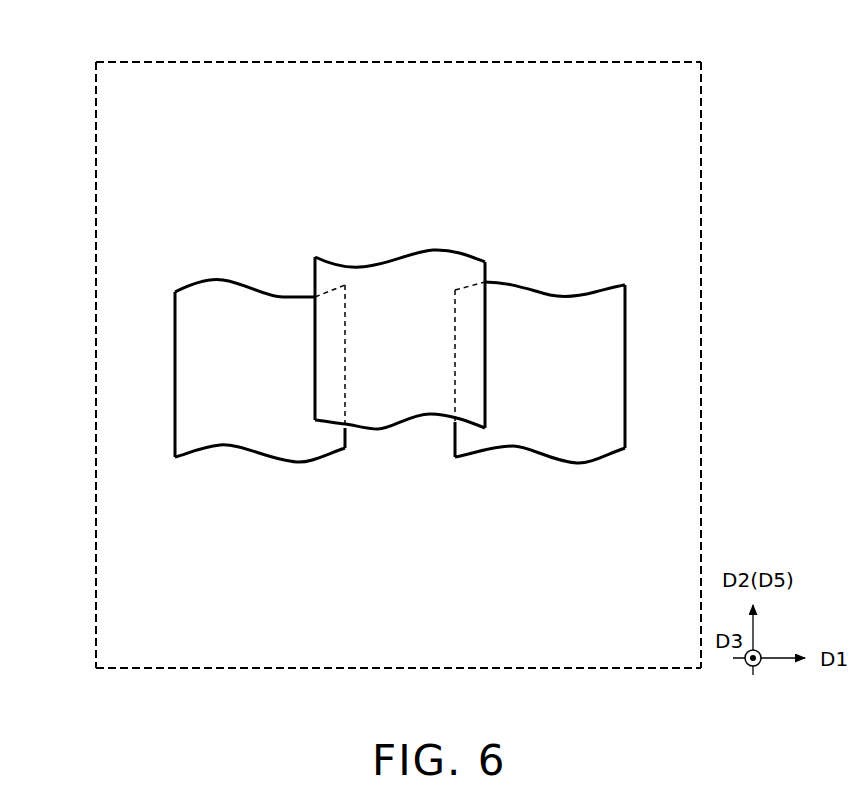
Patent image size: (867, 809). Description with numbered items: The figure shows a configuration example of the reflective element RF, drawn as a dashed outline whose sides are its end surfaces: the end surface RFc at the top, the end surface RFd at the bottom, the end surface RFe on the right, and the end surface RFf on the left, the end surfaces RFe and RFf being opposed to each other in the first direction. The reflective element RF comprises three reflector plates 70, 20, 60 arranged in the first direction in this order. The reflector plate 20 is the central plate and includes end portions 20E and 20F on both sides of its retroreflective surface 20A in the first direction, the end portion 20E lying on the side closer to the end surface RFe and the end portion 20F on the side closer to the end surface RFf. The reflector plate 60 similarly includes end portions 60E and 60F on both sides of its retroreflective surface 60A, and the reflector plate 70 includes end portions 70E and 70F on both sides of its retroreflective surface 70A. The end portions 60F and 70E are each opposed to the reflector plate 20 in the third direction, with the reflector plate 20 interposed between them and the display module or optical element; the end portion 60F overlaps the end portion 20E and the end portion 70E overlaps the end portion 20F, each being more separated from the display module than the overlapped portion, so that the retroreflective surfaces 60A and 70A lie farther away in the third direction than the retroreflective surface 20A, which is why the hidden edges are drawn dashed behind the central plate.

The reflector plate 20 is at (401, 296).
The retroreflective surface 20A is at (423, 299).
The end portion 20E is at (488, 333).
The end portion 20F is at (312, 333).
The reflector plate 60 is at (543, 369).
The retroreflective surface 60A is at (547, 429).
The end portion 60E is at (634, 443).
The end portion 60F is at (451, 443).
The reflector plate 70 is at (262, 360).
The retroreflective surface 70A is at (265, 429).
The end portion 70E is at (351, 441).
The end portion 70F is at (173, 441).
The reflective element RF is at (401, 363).
The end surface RFc is at (398, 61).
The end surface RFd is at (393, 671).
The end surface RFe is at (704, 343).
The end surface RFf is at (95, 343).